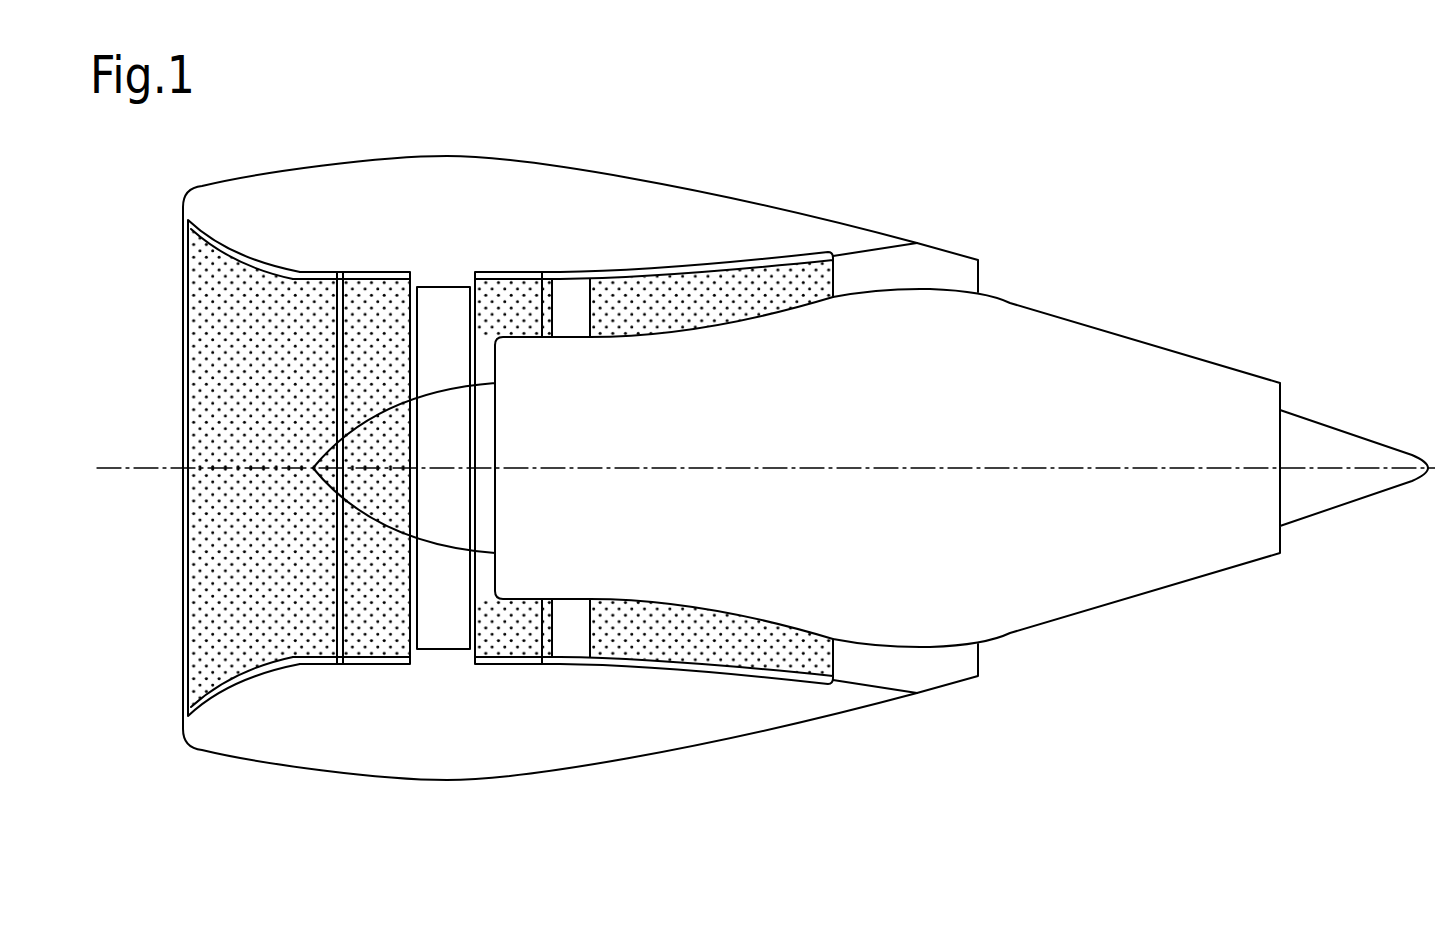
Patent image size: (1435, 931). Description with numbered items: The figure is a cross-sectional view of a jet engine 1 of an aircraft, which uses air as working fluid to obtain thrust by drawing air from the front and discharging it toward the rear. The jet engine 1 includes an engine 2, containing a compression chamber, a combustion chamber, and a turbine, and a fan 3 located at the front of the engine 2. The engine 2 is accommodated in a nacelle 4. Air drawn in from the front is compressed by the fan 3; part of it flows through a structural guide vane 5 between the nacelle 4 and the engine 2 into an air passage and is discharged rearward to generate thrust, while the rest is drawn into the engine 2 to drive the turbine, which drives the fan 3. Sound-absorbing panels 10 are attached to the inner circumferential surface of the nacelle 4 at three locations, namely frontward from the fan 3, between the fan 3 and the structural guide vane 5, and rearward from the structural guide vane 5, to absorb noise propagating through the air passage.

The jet engine 1 is at (159, 603).
The engine 2 is at (605, 578).
The fan 3 is at (437, 640).
The nacelle 4 is at (365, 185).
The structural guide vane 5 is at (572, 312).
The sound-absorbing panels 10 is at (225, 625).